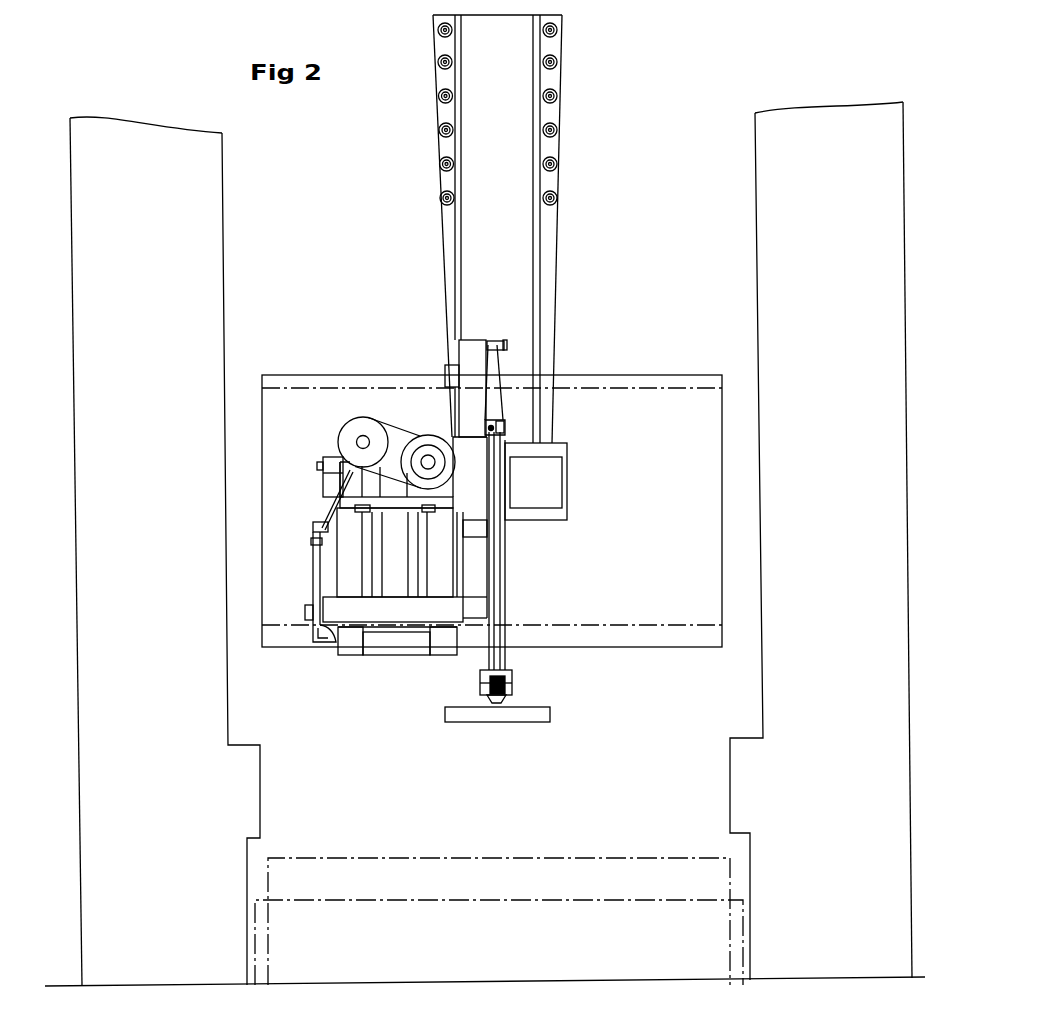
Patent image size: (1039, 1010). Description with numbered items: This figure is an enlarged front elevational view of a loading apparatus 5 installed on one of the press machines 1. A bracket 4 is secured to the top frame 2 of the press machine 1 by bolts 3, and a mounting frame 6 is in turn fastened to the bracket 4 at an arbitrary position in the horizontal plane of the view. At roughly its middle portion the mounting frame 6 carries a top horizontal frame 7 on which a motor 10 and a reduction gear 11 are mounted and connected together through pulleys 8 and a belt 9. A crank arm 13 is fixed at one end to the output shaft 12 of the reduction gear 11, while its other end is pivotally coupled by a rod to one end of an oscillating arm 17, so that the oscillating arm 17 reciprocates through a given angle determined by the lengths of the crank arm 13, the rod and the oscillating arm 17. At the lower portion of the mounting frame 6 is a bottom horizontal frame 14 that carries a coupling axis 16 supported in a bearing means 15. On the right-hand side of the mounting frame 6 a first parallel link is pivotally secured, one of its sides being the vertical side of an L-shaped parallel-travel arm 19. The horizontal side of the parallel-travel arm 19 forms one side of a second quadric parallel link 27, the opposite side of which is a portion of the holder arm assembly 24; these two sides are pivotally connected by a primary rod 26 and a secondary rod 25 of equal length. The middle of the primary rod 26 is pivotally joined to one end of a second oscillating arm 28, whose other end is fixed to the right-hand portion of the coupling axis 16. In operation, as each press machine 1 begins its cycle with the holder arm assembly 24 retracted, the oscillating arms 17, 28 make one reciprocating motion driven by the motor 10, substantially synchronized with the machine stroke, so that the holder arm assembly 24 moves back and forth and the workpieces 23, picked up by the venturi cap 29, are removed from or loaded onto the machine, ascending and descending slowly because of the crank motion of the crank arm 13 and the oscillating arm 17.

The press machine 1 is at (77, 220).
The top frame 2 is at (600, 172).
The bolts 3 is at (438, 62).
The bracket 4 is at (530, 231).
The loading apparatus 5 is at (362, 414).
The mounting frame 6 is at (445, 548).
The top horizontal frame 7 is at (345, 500).
The pulleys 8 is at (355, 428).
The belt 9 is at (400, 426).
The motor 10 is at (438, 450).
The reduction gear 11 is at (350, 473).
The output shaft 12 is at (318, 466).
The crank arm 13 is at (325, 485).
The bottom horizontal frame 14 is at (350, 650).
The bearing means 15 is at (397, 615).
The coupling axis 16 is at (305, 612).
The oscillating arm 17 is at (335, 643).
The L-shaped parallel-travel arm 19 is at (497, 400).
The workpieces 23 is at (535, 713).
The holder arm assembly 24 is at (514, 688).
The secondary rod 25 is at (493, 632).
The primary rod 26 is at (505, 600).
The second quadric parallel link 27 is at (505, 530).
The oscillating arm 28 is at (478, 568).
The venturi cap 29 is at (488, 700).